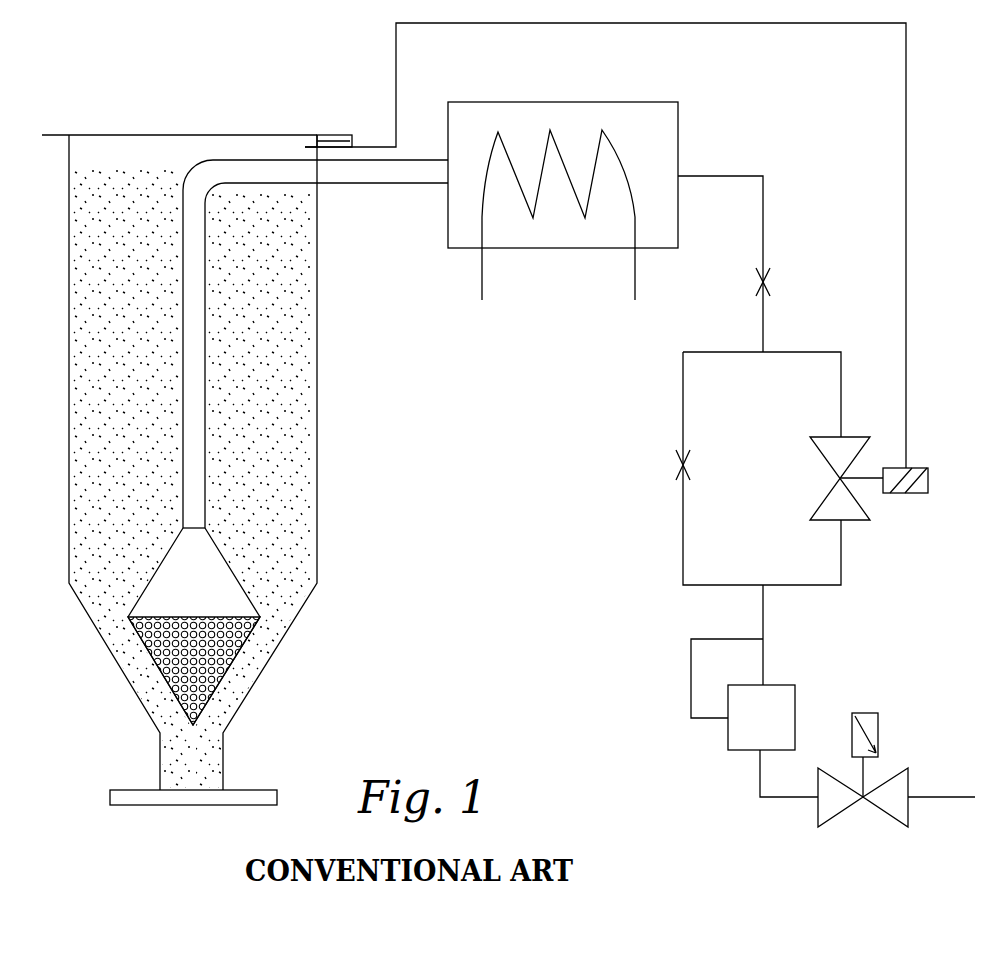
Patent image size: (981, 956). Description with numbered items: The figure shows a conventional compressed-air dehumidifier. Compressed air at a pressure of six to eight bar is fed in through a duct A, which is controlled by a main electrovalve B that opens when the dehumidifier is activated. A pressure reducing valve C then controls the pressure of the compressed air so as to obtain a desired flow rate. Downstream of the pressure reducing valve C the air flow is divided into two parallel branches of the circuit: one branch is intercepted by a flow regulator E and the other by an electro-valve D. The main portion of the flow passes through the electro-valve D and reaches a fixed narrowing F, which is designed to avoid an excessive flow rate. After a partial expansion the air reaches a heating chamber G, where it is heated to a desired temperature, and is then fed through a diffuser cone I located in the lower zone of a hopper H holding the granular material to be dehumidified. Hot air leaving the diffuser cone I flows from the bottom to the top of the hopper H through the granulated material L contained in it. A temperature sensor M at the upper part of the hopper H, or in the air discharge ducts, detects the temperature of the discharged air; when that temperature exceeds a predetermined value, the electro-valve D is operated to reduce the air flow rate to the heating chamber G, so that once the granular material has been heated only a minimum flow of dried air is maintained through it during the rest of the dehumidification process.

The duct A is at (785, 800).
The main electrovalve B is at (878, 727).
The pressure reducing valve C is at (795, 688).
The electro-valve D is at (855, 520).
The flow regulator E is at (682, 467).
The fixed narrowing F is at (767, 287).
The heating chamber G is at (565, 250).
The hopper H is at (322, 501).
The diffuser cone I is at (238, 650).
The granulated material L is at (293, 380).
The temperature sensor M is at (350, 140).